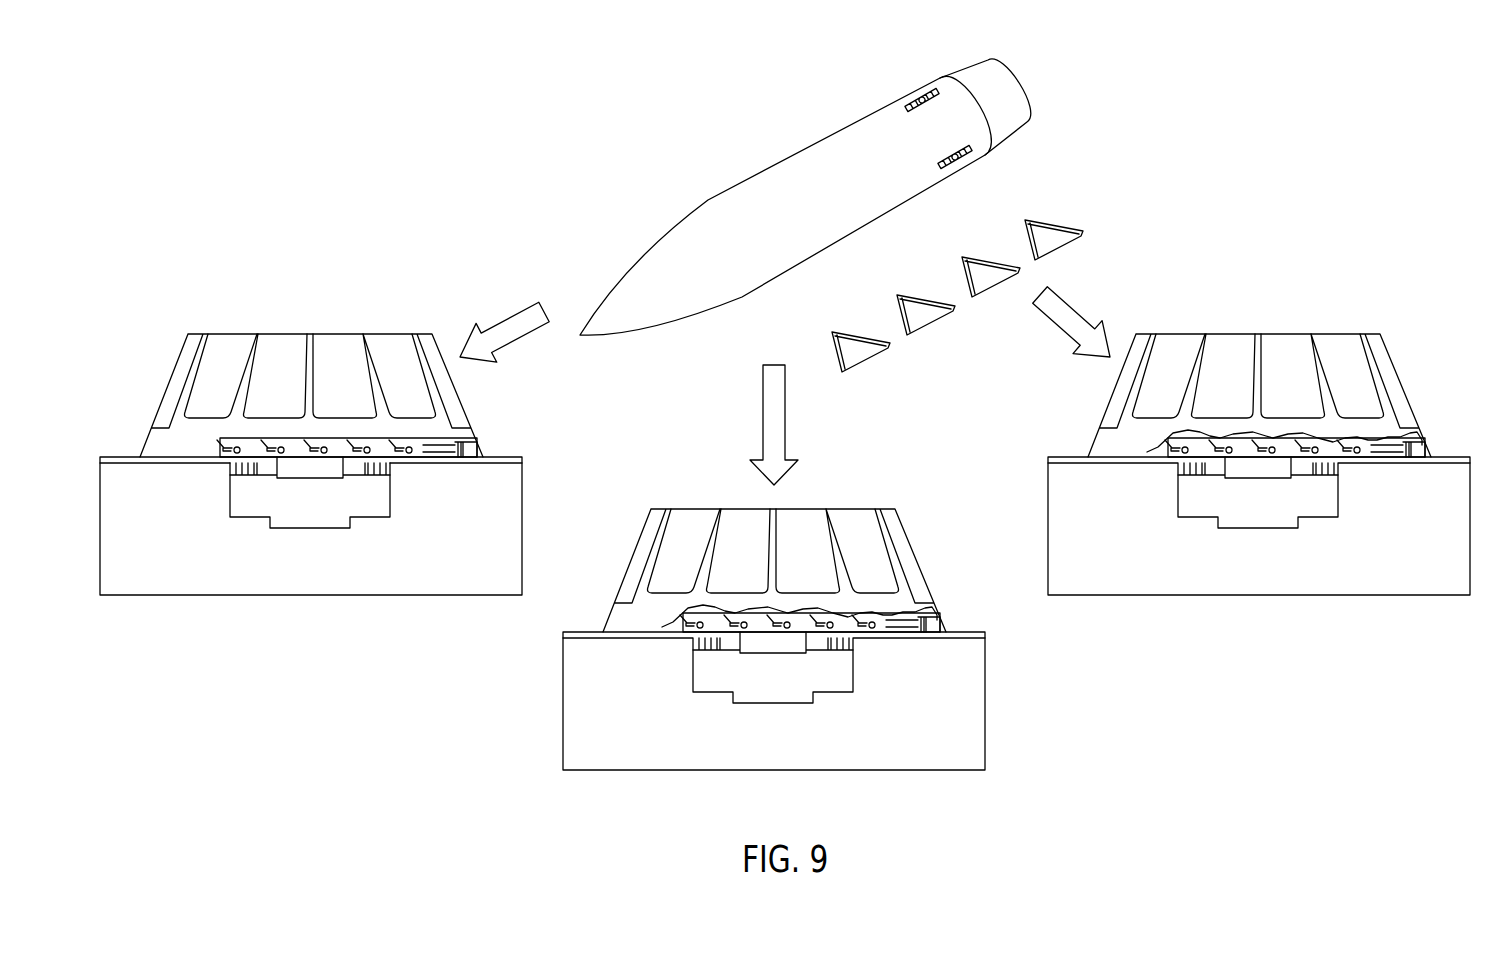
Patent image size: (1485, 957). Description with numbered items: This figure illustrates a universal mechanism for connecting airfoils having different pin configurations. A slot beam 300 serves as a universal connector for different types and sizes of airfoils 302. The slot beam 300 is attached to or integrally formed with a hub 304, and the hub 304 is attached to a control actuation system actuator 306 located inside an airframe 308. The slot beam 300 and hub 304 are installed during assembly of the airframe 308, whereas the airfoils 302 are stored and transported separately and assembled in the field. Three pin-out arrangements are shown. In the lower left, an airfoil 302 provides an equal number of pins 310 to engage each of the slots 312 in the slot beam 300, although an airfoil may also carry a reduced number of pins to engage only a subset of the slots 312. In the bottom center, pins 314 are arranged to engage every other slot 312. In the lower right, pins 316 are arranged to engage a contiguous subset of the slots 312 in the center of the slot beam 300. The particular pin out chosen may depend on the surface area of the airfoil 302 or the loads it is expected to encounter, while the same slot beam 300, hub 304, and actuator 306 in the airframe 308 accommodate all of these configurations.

The slot beam 300 is at (923, 103).
The airfoil 302 is at (1066, 216).
The hub 304 is at (303, 467).
The control actuation system (CAS) actuator 306 is at (320, 505).
The airframe 308 is at (745, 172).
The pins 310 is at (280, 448).
The slots 312 is at (353, 442).
The pins 314 is at (872, 625).
The pins 316 is at (1313, 450).